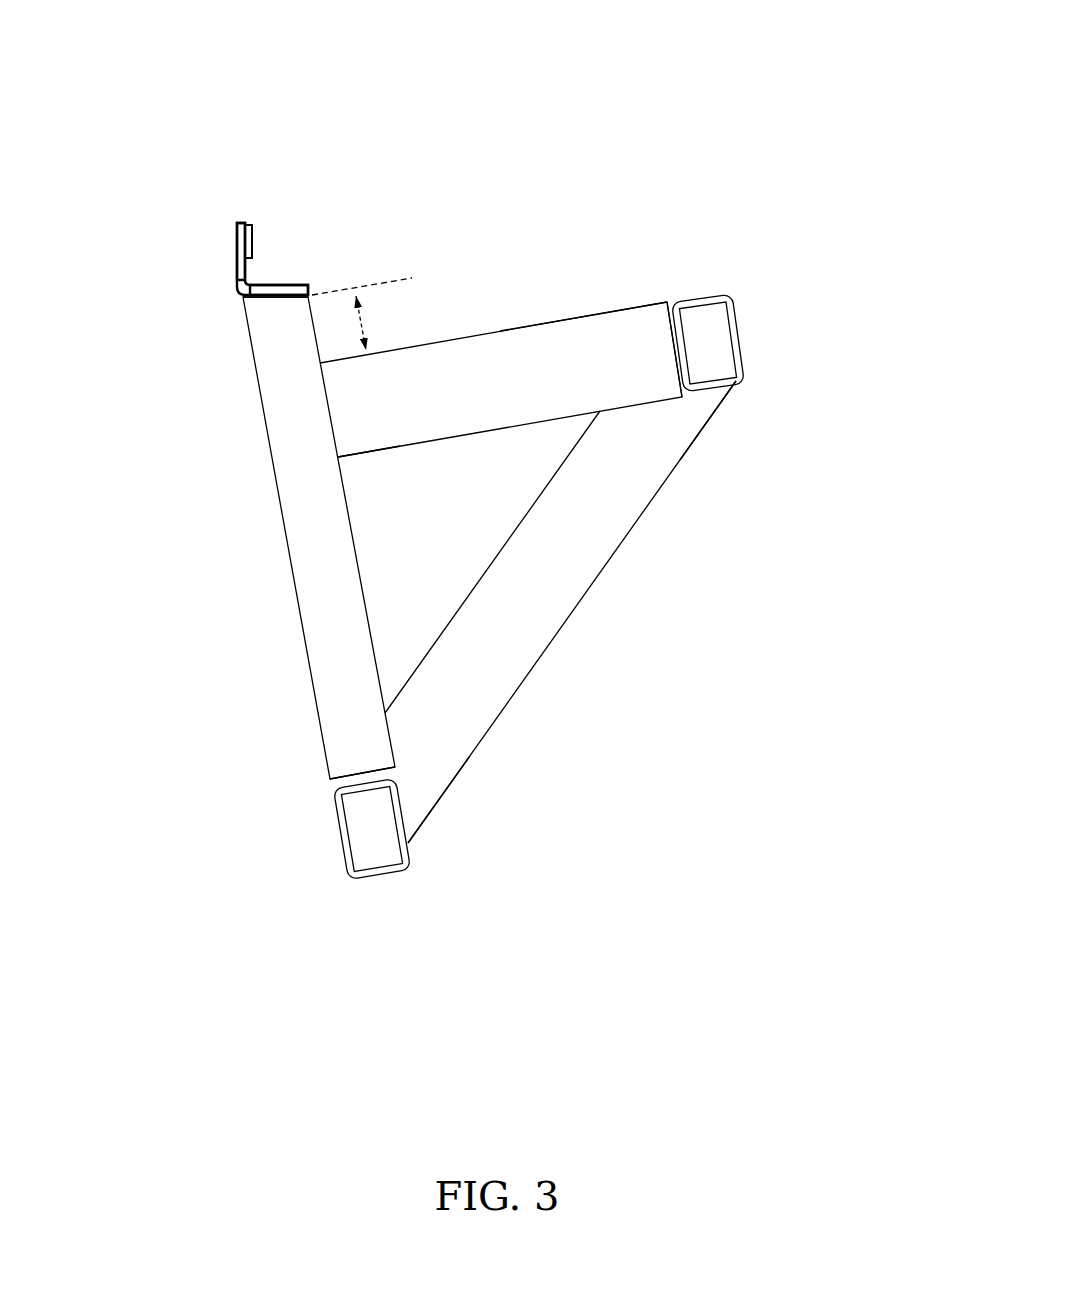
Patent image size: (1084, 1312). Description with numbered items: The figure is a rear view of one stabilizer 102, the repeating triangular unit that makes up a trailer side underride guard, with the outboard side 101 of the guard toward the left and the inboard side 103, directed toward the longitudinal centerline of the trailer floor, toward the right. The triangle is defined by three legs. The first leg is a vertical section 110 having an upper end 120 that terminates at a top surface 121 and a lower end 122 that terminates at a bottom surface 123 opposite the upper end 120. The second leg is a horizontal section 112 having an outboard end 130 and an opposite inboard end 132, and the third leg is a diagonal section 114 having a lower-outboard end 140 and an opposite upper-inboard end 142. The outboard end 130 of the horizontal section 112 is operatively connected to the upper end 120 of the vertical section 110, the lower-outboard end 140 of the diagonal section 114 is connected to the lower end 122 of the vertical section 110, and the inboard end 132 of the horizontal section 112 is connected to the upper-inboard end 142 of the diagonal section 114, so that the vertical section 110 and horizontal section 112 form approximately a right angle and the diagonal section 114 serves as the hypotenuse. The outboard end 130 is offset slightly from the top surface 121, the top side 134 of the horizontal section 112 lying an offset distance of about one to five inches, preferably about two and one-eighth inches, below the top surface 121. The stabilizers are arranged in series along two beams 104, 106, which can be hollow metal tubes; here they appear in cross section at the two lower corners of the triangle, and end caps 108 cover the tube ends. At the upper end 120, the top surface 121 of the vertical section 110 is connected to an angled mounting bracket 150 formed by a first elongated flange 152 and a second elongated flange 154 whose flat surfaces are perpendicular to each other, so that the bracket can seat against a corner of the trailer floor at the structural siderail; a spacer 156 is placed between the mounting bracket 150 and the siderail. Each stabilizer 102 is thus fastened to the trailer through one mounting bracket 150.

The outboard side 101 is at (201, 445).
The stabilizer 102 is at (793, 150).
The inboard side 103 is at (797, 313).
The beam 104 is at (342, 837).
The beam 106 is at (702, 294).
The end cap 108 is at (379, 844).
The vertical section 110 is at (313, 590).
The horizontal section 112 is at (488, 350).
The diagonal section 114 is at (528, 638).
The upper end 120 is at (242, 348).
The top surface 121 is at (258, 302).
The lower end 122 is at (307, 743).
The bottom surface 123 is at (355, 768).
The outboard end 130 is at (362, 468).
The inboard end 132 is at (644, 289).
The top side 134 is at (571, 313).
The lower-outboard end 140 is at (447, 836).
The upper-inboard end 142 is at (719, 422).
The mounting bracket 150 is at (237, 281).
The first elongated flange 152 is at (237, 247).
The second elongated flange 154 is at (290, 284).
The spacer 156 is at (254, 242).